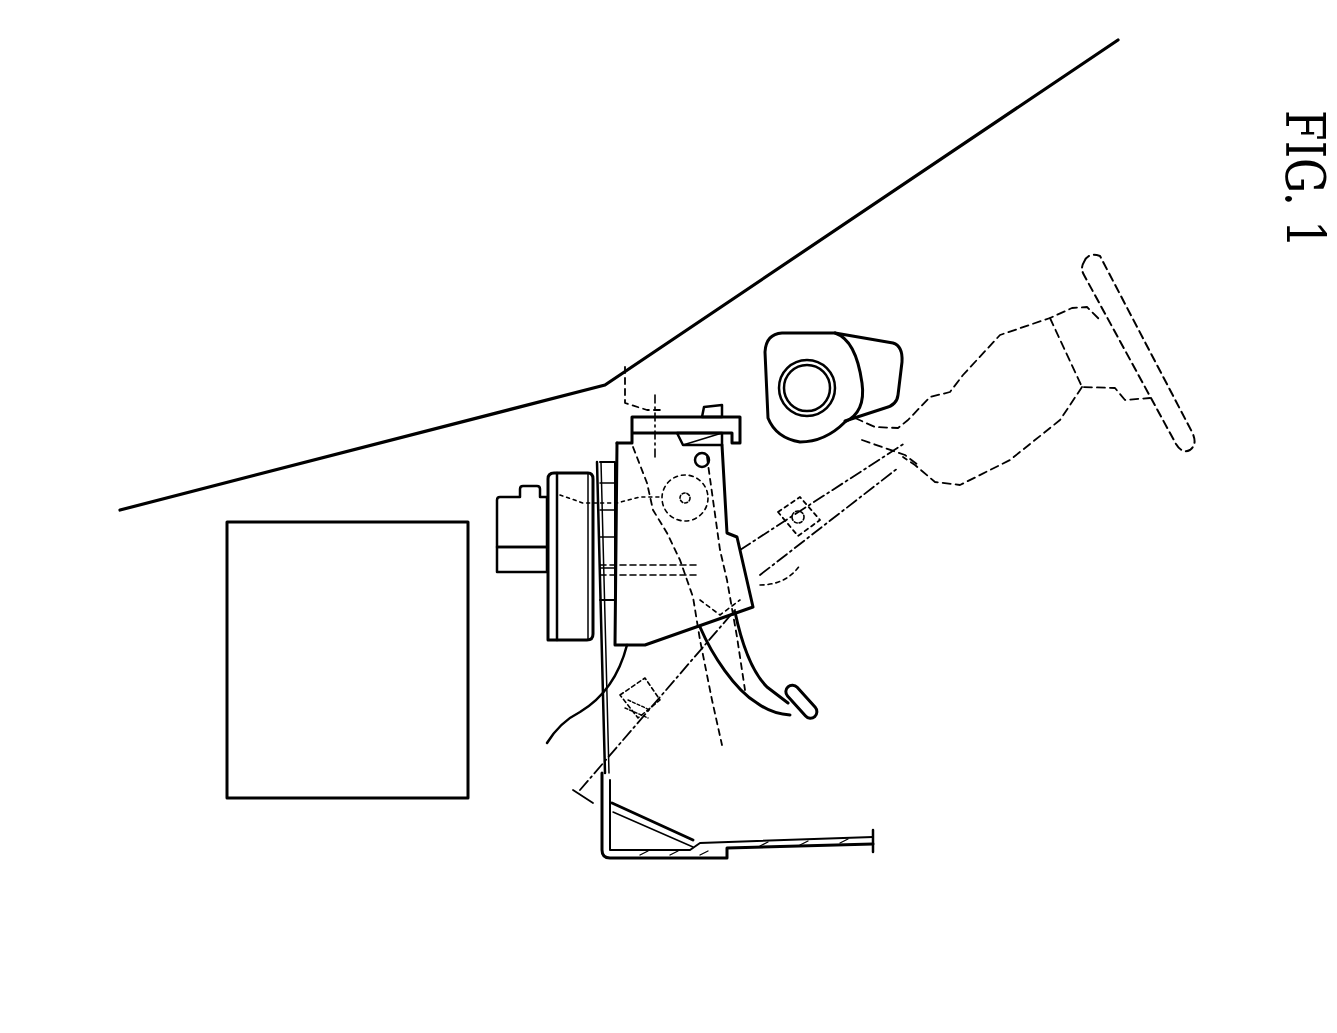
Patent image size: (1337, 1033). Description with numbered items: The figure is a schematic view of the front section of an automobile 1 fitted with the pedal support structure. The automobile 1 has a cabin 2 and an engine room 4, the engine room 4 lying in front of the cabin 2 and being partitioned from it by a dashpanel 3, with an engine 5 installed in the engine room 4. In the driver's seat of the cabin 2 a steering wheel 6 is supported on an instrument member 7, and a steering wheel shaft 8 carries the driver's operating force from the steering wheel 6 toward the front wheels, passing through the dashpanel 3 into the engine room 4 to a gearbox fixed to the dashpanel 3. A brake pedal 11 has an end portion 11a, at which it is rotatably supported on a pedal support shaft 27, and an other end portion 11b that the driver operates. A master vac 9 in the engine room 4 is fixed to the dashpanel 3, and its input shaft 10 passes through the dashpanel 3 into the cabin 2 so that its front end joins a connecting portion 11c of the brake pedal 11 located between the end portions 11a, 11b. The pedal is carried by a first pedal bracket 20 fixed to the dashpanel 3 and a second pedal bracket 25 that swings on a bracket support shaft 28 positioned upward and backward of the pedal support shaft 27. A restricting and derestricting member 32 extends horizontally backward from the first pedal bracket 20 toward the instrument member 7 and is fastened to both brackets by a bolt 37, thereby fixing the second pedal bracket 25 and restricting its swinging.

The automobile 1 is at (393, 338).
The cabin 2 is at (900, 599).
The dashpanel 3 is at (600, 678).
The engine room 4 is at (368, 504).
The engine 5 is at (227, 690).
The steering wheel 6 is at (1140, 348).
The instrument member 7 is at (826, 333).
The steering wheel shaft 8 is at (690, 690).
The master vac 9 is at (574, 473).
The input shaft 10 is at (656, 520).
The brake pedal 11 is at (740, 647).
The end portion 11a is at (845, 505).
The other end portion 11b is at (815, 695).
The connecting portion 11c is at (767, 585).
The first pedal bracket 20 is at (702, 751).
The second pedal bracket 25 is at (560, 495).
The pedal support shaft 27 is at (760, 545).
The bracket support shaft 28 is at (709, 459).
The restricting and derestricting member 32 is at (698, 405).
The bolt 37 is at (625, 367).